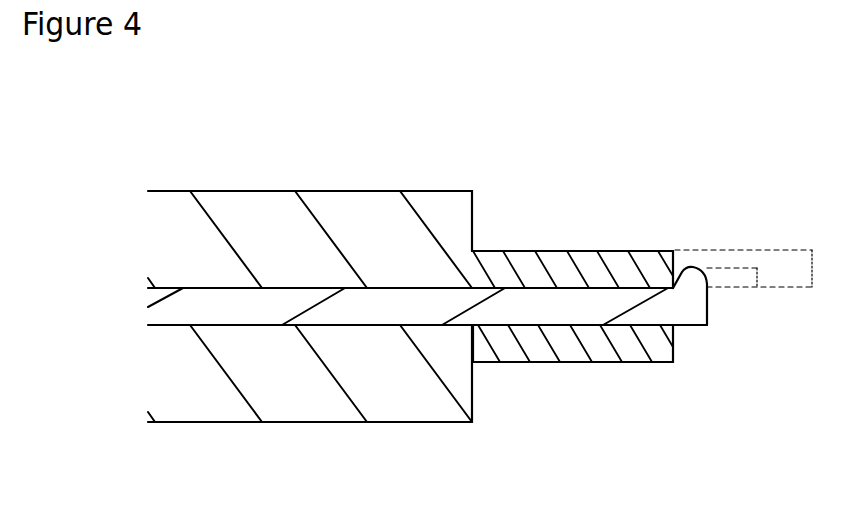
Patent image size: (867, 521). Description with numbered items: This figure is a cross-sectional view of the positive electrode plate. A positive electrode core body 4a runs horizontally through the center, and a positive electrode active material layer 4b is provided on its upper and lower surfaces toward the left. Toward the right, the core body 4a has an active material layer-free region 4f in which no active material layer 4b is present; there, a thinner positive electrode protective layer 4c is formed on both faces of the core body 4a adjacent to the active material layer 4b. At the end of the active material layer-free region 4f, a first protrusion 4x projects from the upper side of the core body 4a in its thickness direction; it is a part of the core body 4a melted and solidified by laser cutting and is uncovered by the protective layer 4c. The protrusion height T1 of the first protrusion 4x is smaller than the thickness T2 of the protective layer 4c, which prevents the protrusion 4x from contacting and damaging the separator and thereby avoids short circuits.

The positive electrode core body 4a is at (273, 288).
The positive electrode active material layer 4b is at (335, 215).
The positive electrode protective layer 4c is at (590, 268).
The active material layer-free region 4f is at (568, 307).
The first protrusion 4x is at (693, 267).
The protrusion height T1 is at (759, 277).
The thickness of the positive electrode protective layer T2 is at (757, 268).